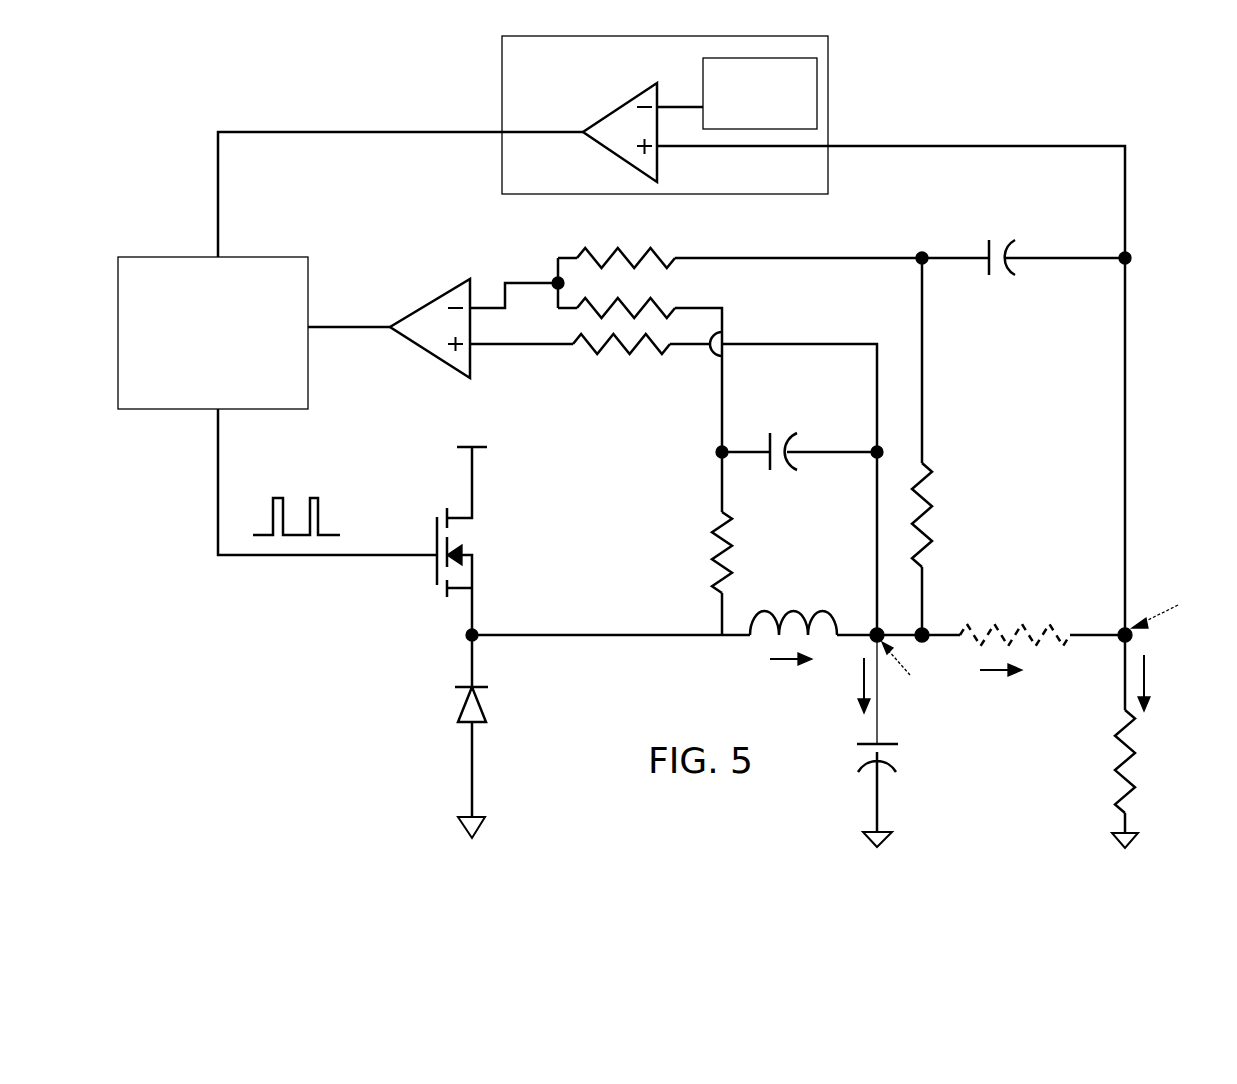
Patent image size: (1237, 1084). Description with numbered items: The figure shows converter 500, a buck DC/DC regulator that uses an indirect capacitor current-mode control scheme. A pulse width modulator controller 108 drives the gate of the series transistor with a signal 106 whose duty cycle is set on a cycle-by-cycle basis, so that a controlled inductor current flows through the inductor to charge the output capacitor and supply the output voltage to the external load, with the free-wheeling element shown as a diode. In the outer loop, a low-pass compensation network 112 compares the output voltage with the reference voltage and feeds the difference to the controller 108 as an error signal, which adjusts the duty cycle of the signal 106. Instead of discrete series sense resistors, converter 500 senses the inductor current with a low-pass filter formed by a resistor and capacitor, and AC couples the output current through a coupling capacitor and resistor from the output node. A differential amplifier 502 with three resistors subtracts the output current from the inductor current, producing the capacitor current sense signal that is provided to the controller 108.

The converter 500 is at (1158, 88).
The low-pass compensation network 112 is at (502, 76).
The pulse width modulator controller 108 is at (130, 410).
The signal 106 is at (322, 512).
The differential amplifier 502 is at (410, 340).